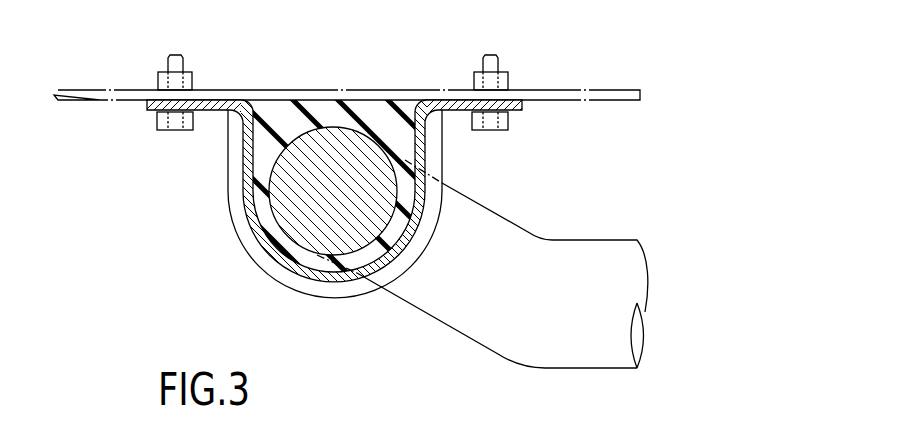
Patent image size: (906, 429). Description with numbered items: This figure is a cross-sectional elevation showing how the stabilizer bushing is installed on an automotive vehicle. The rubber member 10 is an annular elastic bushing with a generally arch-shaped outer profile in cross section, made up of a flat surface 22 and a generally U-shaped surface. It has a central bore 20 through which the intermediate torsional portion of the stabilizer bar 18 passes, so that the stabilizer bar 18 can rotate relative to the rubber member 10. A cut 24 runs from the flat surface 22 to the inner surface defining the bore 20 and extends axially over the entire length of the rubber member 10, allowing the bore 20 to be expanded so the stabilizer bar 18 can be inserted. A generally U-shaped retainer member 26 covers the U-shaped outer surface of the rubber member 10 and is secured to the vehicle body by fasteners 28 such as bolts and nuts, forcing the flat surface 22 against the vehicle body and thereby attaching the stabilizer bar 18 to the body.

The rubber member 10 is at (329, 86).
The stabilizer bar 18 is at (426, 310).
The central bore 20 is at (301, 140).
The flat surface 22 is at (363, 100).
The cut 24 is at (373, 112).
The retainer member 26 is at (272, 252).
The fasteners 28 is at (150, 136).